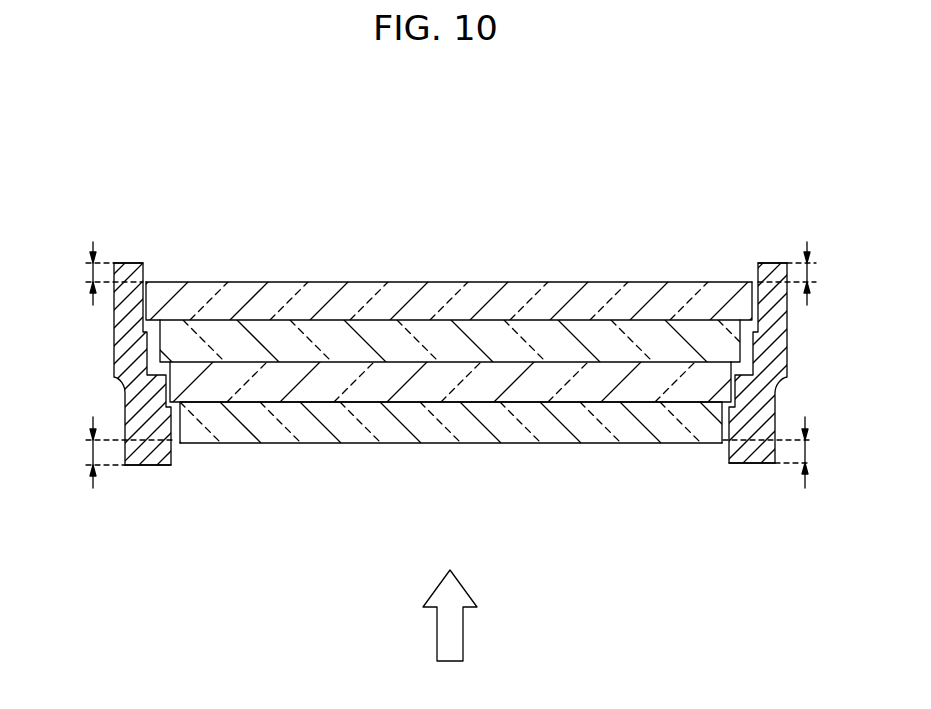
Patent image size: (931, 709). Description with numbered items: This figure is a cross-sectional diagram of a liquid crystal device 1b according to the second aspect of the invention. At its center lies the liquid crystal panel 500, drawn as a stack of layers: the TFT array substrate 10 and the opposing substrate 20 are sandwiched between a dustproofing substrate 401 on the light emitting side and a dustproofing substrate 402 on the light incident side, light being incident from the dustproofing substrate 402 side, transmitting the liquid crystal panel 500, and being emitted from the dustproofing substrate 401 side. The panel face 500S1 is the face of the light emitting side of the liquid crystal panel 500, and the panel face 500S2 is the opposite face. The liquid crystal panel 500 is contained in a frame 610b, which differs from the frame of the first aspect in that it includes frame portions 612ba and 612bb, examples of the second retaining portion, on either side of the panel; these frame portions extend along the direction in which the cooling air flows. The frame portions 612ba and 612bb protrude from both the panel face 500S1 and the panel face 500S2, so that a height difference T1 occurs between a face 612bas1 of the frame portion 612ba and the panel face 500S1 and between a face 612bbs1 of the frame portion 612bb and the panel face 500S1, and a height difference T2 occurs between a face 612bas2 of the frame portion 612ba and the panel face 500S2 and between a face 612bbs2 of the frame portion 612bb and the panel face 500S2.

The liquid crystal device 1b is at (509, 160).
The liquid crystal panel 500 is at (515, 254).
The panel face of the light emitting side 500S1 is at (645, 281).
The panel face 500S2 is at (633, 445).
The dustproofing substrate 401 is at (399, 294).
The dustproofing substrate 402 is at (433, 432).
The TFT array substrate 10 is at (286, 338).
The opposing substrate 20 is at (333, 385).
The frame 610b is at (116, 379).
The frame portion 612ba is at (117, 332).
The frame portion 612bb is at (782, 332).
The face of the light emitting side of frame portion 612ba 612bas1 is at (128, 262).
The face of frame portion 612ba 612bas2 is at (135, 466).
The face of the light emitting side of frame portion 612bb 612bbs1 is at (771, 263).
The face of frame portion 612bb 612bbs2 is at (752, 466).
The height difference T1 is at (93, 264).
The height difference T2 is at (93, 449).